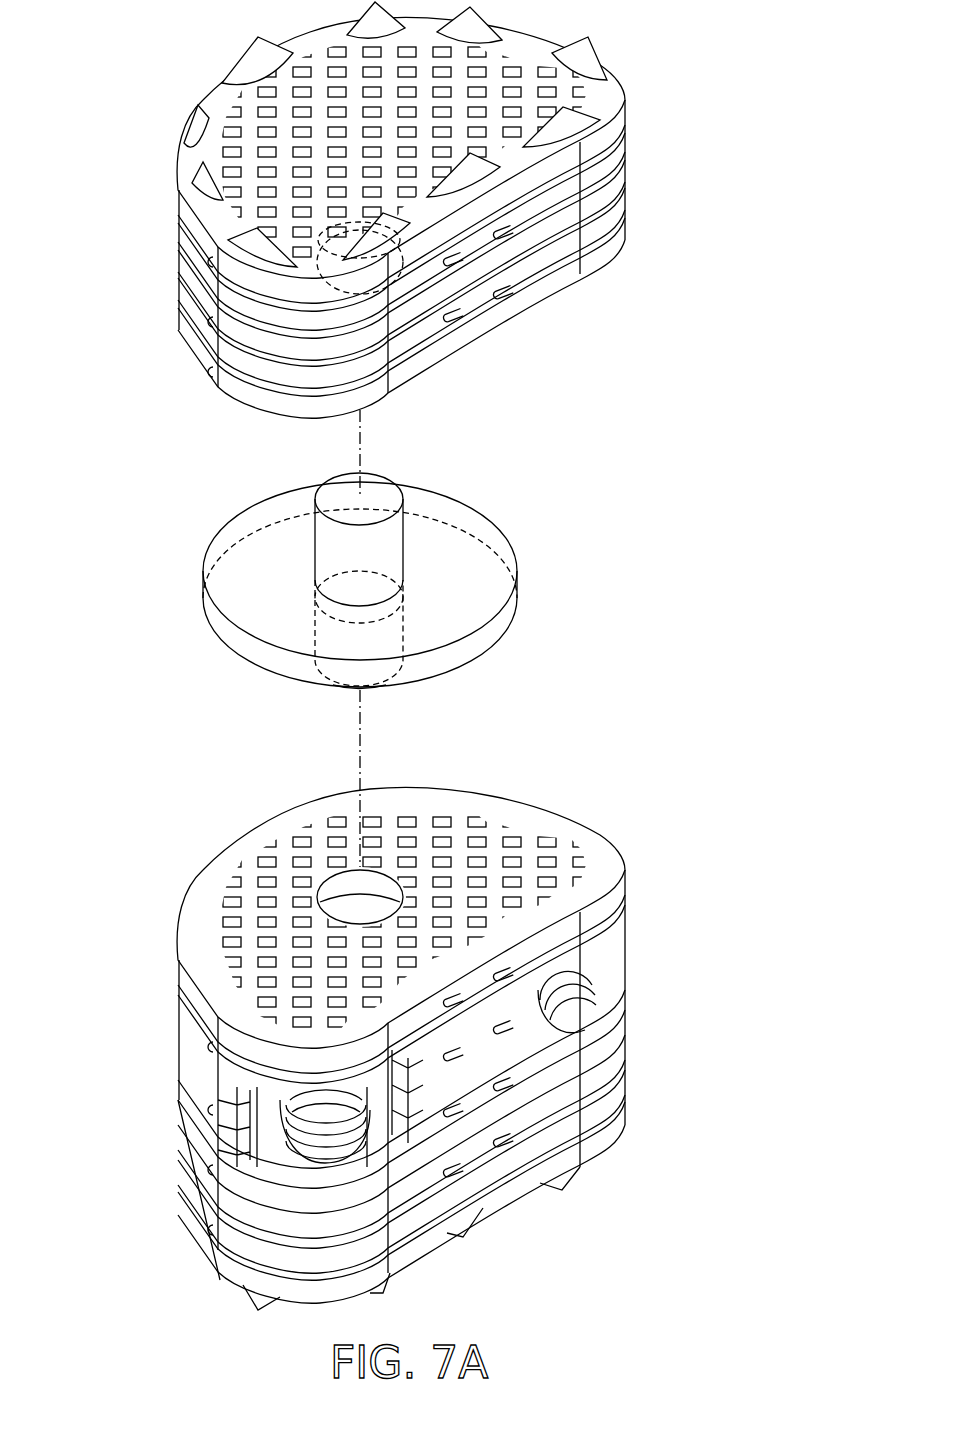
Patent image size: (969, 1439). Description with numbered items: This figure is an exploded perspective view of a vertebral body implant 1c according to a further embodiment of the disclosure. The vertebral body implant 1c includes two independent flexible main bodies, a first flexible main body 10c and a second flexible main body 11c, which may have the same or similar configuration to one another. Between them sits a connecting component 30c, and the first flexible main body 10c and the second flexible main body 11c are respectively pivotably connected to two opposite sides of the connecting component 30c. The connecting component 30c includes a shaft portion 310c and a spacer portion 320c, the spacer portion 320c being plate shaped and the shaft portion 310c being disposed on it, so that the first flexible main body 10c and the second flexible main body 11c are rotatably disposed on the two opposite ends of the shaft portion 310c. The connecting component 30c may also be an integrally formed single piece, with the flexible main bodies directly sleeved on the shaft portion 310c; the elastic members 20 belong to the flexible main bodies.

The vertebral body implant 1c is at (62, 30).
The second flexible main body 11c is at (642, 115).
The first flexible main body 10c is at (462, 1056).
The connecting component 30c is at (382, 581).
The shaft portion 310c is at (332, 537).
The spacer portion 320c is at (487, 631).
The elastic member (spring) 20 is at (602, 990).